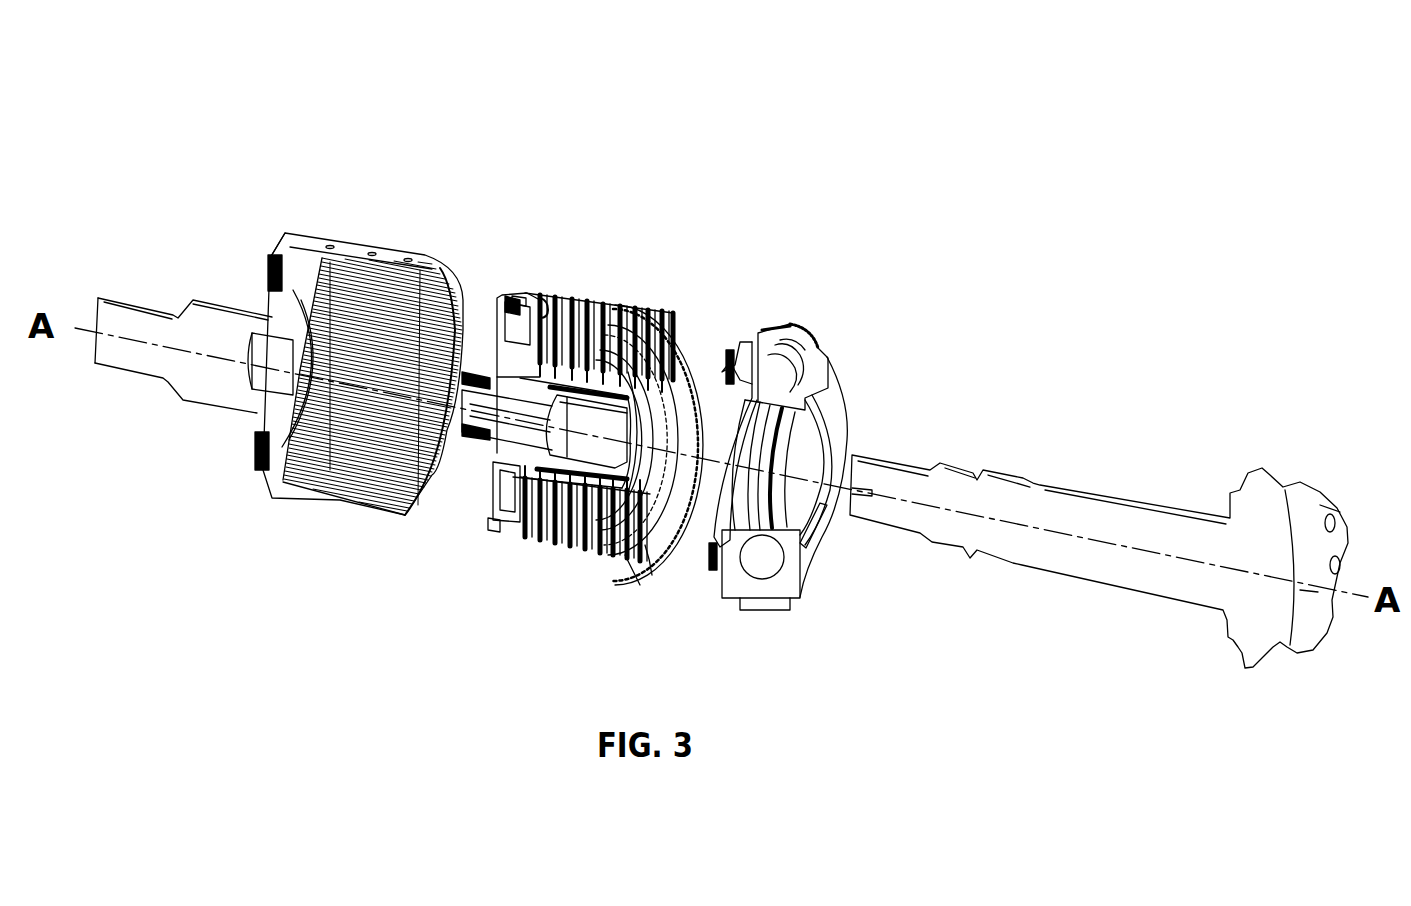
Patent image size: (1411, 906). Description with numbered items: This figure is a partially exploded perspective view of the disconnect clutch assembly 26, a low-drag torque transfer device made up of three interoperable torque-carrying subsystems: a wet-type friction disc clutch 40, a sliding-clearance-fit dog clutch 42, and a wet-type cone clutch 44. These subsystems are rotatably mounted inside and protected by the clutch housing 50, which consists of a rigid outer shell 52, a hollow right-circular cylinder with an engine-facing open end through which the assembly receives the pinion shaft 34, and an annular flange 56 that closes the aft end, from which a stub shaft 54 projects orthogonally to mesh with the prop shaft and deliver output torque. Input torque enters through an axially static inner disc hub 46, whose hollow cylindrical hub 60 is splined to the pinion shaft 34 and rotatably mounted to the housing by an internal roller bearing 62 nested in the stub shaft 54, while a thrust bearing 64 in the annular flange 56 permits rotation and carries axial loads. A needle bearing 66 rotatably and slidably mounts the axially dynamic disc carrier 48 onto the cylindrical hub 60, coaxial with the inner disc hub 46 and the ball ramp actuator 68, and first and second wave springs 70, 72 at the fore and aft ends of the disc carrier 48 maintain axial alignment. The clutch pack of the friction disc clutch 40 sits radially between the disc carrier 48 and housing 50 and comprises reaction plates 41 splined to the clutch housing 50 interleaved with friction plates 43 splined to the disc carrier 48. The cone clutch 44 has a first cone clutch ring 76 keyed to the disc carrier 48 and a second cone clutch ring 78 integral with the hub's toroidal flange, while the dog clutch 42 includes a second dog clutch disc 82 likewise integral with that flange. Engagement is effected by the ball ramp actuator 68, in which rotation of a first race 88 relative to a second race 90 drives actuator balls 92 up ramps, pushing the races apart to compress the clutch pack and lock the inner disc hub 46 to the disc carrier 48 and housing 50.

The disconnect clutch assembly 26 is at (203, 110).
The pinion shaft 34 is at (1076, 490).
The friction disc clutch 40 is at (633, 234).
The reaction plates 41 is at (680, 315).
The dog clutch 42 is at (555, 258).
The friction plates 43 is at (650, 564).
The cone clutch 44 is at (493, 303).
The inner disc hub 46 is at (472, 472).
The dynamic disc carrier 48 is at (531, 550).
The clutch housing 50 is at (320, 193).
The outer shell 52 is at (283, 233).
The stub shaft 54 is at (147, 305).
The annular flange 56 is at (286, 482).
The cylindrical hub 60 is at (595, 492).
The internal roller bearing 62 is at (438, 462).
The thrust bearing 64 is at (336, 470).
The needle bearing 66 is at (468, 449).
The ball ramp actuator 68 is at (800, 436).
The first wave spring 70 is at (712, 540).
The second wave spring 72 is at (550, 540).
The first cone clutch ring 76 is at (495, 532).
The second cone clutch ring 78 is at (490, 506).
The second dog clutch disc 82 is at (512, 293).
The first race 88 is at (772, 323).
The second race 90 is at (852, 346).
The actuator balls 92 is at (757, 567).